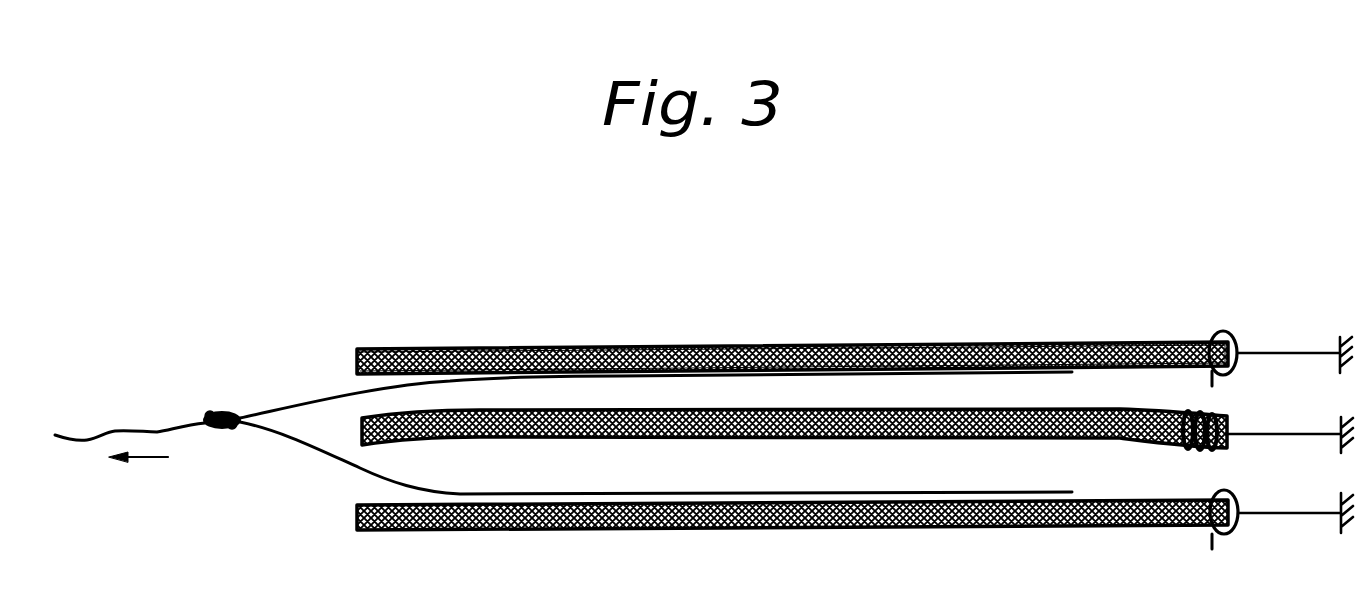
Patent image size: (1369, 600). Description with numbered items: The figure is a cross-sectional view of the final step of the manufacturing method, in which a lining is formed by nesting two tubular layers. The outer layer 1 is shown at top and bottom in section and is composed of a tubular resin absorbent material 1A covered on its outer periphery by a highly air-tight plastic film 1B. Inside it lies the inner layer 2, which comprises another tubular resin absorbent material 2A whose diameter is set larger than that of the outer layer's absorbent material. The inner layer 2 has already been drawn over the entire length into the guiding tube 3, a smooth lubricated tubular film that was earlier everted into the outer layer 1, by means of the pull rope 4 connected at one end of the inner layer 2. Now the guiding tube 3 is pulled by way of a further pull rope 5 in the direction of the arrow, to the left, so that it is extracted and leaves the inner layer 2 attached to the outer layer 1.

The outer layer 1 is at (797, 304).
The tubular resin absorbent material 1A is at (837, 343).
The highly air-tight plastic film 1B is at (863, 268).
The inner layer 2 is at (794, 448).
The tubular resin absorbent material 2A is at (768, 437).
The guiding tube 3 is at (290, 441).
The pull rope 4 is at (1273, 434).
The pull rope 5 is at (157, 430).